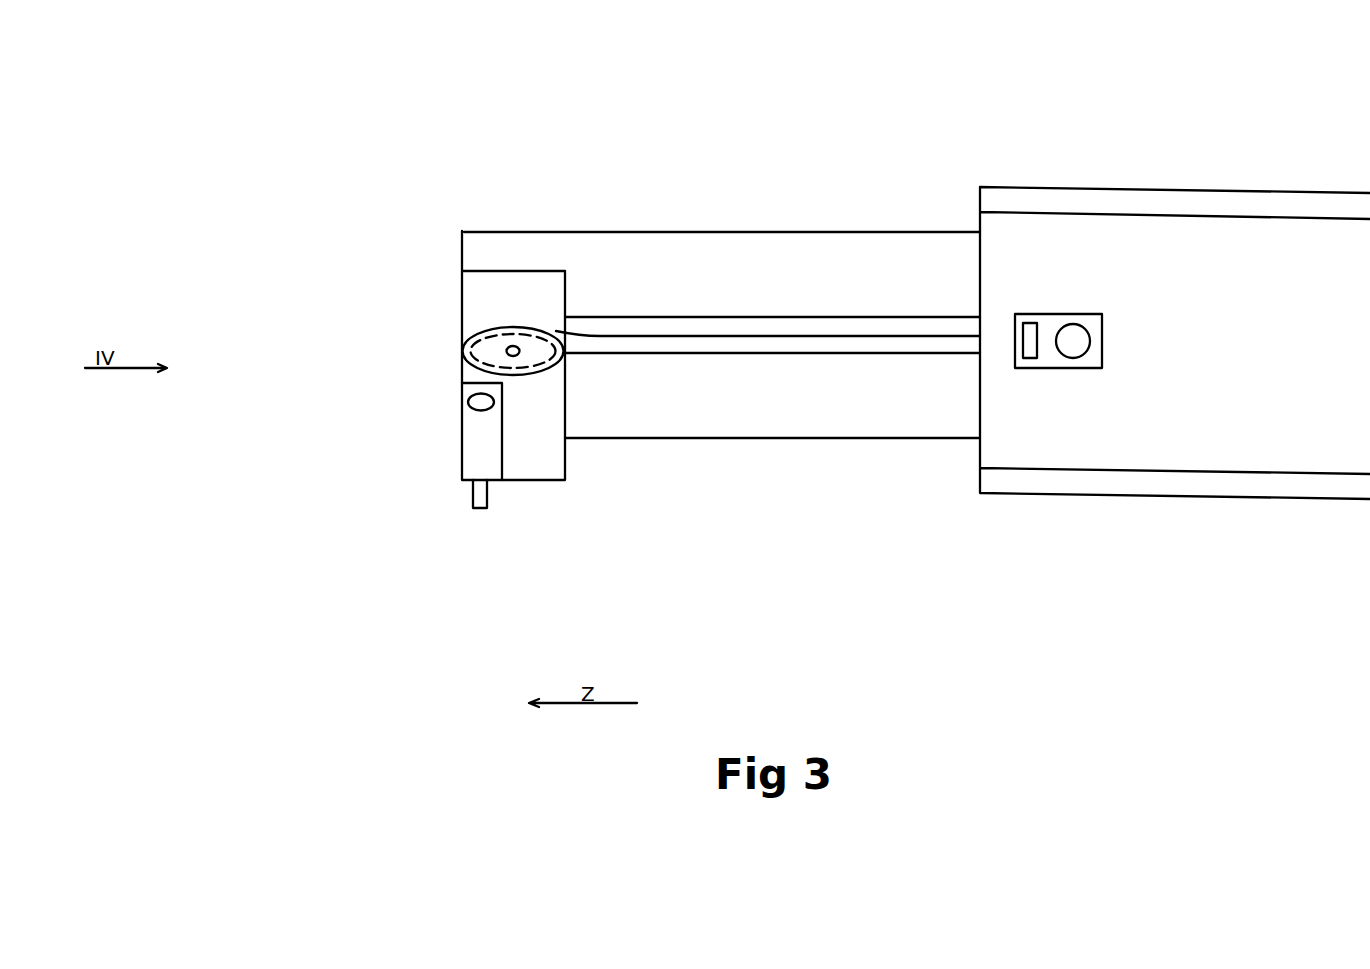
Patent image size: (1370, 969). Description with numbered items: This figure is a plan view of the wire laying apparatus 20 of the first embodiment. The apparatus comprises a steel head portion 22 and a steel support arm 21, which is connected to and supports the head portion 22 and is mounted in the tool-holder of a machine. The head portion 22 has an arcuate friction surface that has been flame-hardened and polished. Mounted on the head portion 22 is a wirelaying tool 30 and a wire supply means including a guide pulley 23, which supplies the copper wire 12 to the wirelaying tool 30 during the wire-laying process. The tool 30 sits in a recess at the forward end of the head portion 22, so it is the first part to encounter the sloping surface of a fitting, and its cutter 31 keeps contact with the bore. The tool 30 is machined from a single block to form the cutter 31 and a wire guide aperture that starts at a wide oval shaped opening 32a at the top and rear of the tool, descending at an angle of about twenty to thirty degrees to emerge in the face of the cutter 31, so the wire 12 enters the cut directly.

The copper wire 12 is at (466, 367).
The wire laying apparatus 20 is at (758, 198).
The support arm 21 is at (809, 421).
The head portion 22 is at (547, 460).
The guide pulley 23 is at (502, 330).
The wirelaying tool 30 is at (472, 453).
The cutter 31 is at (486, 516).
The oval shaped opening 32a is at (470, 403).